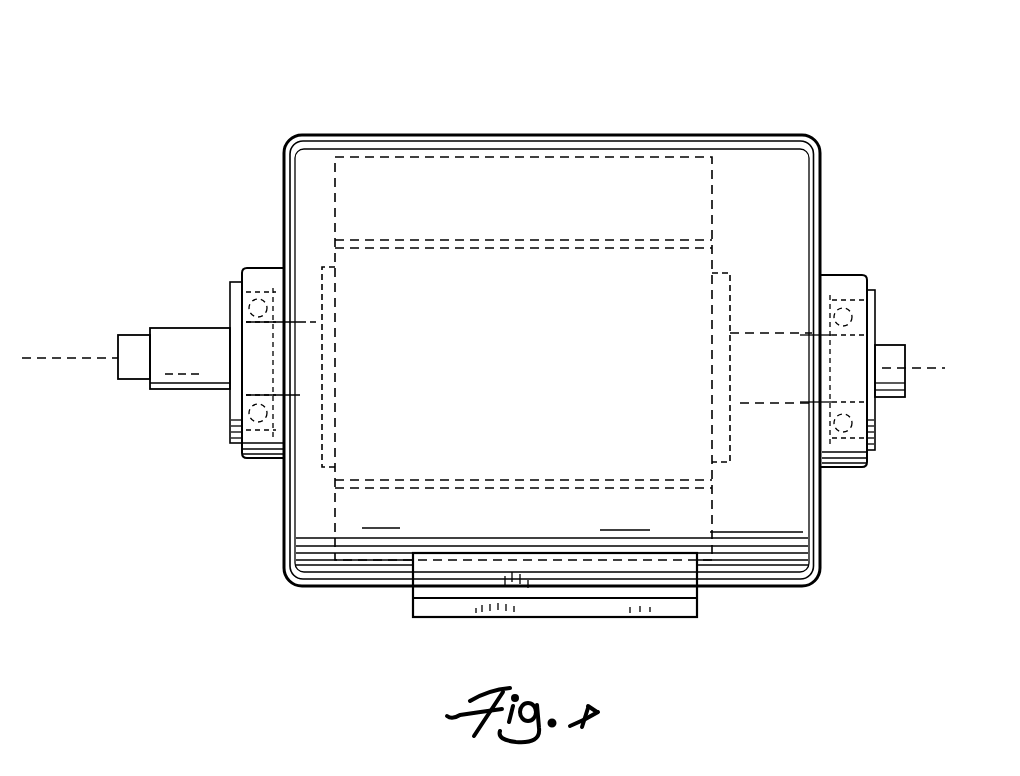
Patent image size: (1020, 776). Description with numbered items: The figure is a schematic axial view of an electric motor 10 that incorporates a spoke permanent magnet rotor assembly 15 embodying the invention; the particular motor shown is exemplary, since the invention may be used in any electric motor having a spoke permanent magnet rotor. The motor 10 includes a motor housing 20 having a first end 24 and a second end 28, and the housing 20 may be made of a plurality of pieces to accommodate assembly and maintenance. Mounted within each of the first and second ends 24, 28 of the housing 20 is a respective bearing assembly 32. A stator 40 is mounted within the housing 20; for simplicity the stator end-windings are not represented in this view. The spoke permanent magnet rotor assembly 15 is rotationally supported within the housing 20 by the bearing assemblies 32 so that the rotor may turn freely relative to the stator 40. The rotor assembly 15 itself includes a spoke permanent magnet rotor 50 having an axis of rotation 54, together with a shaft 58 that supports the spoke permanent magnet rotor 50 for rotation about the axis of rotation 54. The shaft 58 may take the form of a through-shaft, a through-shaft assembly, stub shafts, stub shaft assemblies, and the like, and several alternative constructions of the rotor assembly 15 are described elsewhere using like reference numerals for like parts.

The electric motor 10 is at (451, 104).
The spoke permanent magnet rotor assembly 15 is at (738, 316).
The motor housing 20 is at (748, 145).
The first end 24 is at (284, 167).
The second end 28 is at (820, 183).
The bearing assembly 32 is at (258, 268).
The stator 40 is at (548, 203).
The spoke permanent magnet rotor 50 is at (602, 356).
The axis of rotation 54 is at (45, 358).
The shaft 58 is at (340, 293).